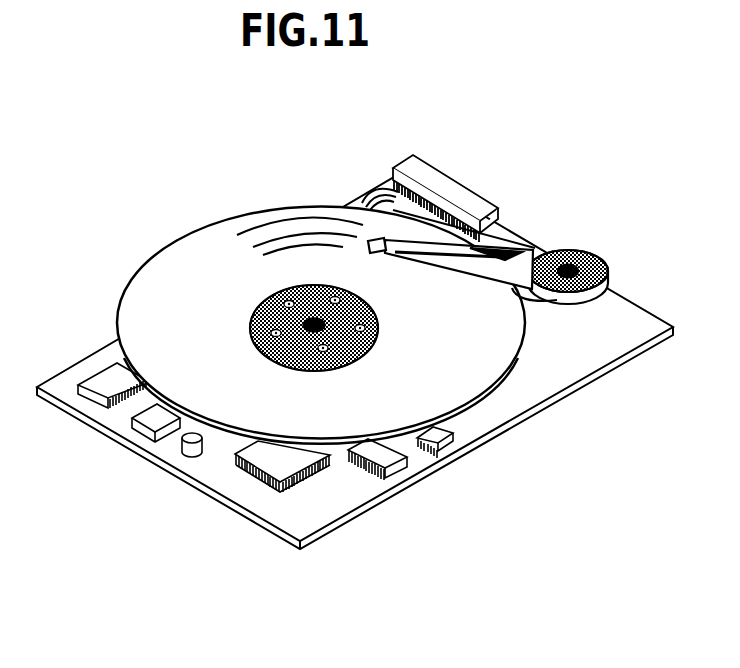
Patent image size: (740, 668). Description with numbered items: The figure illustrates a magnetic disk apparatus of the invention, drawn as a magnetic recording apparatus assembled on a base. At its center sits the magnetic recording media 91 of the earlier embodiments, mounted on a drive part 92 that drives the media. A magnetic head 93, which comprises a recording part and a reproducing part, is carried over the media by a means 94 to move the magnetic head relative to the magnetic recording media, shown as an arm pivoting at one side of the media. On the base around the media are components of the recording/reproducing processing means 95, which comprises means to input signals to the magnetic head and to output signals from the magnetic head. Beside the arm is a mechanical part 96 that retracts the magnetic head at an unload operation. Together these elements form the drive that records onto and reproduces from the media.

The magnetic recording media 91 is at (148, 317).
The drive part 92 is at (278, 306).
The magnetic head 93 is at (380, 237).
The means to move magnetic head 94 is at (570, 250).
The recording/reproducing processing means 95 is at (400, 450).
The mechanical part to retract magnetic head 96 is at (365, 193).